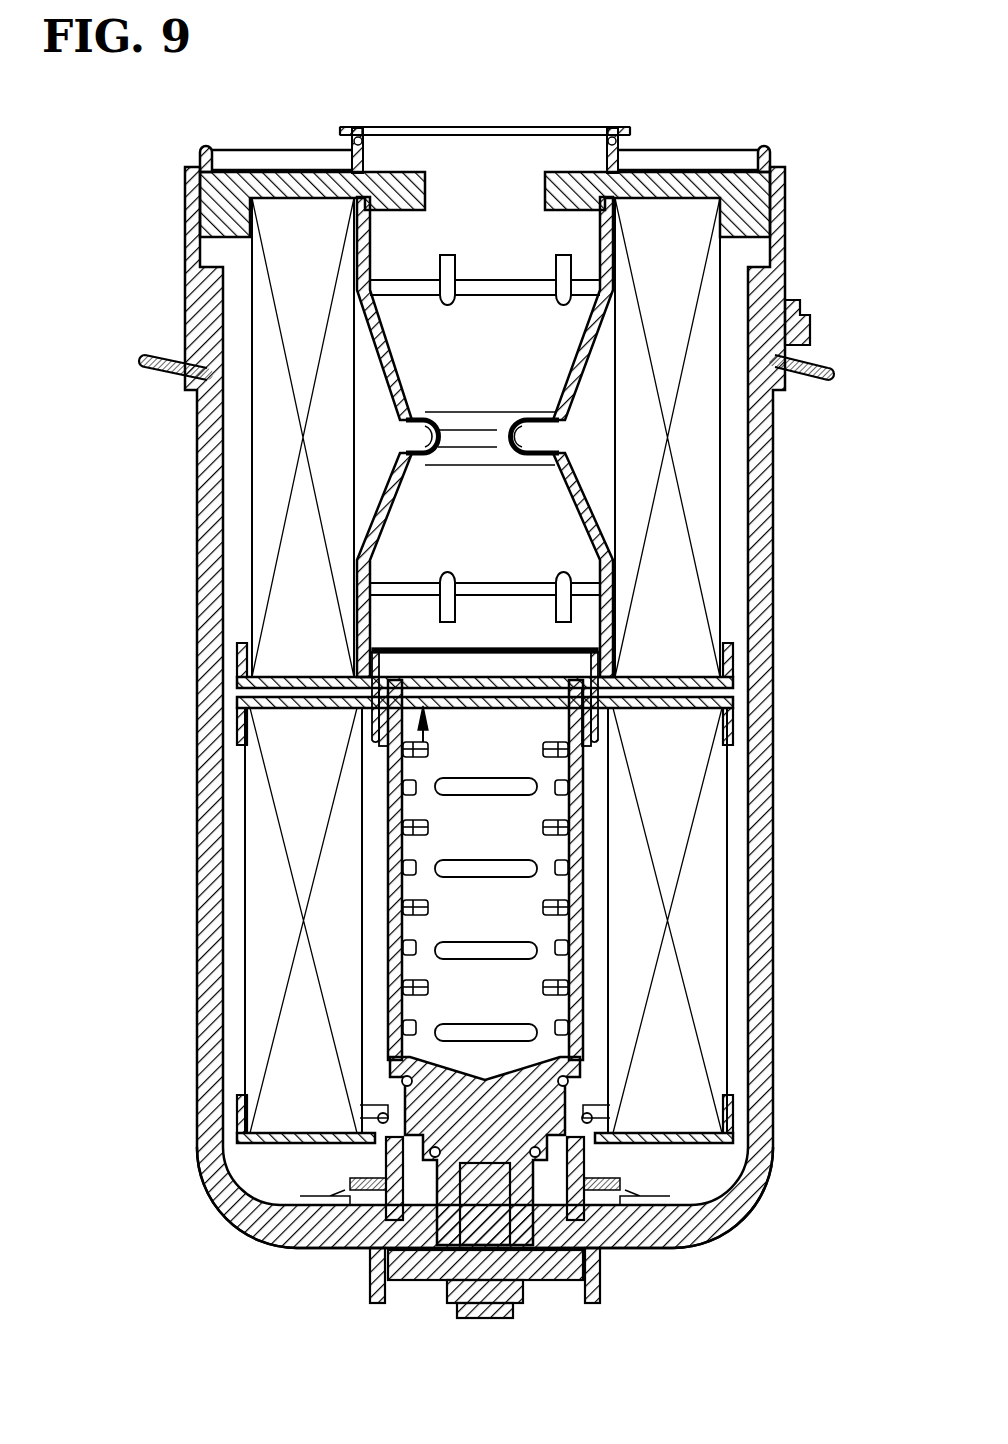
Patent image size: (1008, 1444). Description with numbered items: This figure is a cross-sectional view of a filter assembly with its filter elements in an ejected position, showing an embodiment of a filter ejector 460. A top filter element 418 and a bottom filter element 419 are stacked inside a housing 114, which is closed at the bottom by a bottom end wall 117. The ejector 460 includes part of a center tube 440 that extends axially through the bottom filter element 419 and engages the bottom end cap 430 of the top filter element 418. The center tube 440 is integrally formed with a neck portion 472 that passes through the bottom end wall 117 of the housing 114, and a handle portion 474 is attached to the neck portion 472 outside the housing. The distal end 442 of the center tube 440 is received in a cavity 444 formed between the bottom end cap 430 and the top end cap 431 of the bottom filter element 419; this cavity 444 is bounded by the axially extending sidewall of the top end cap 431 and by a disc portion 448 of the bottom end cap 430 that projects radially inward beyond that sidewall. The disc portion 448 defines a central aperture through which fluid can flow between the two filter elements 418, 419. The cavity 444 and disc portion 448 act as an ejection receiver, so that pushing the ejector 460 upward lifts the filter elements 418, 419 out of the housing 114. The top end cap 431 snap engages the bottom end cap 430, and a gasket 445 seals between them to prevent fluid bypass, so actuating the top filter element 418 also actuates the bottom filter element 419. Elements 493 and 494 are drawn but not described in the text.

The housing 114 is at (773, 697).
The bottom end wall 117 is at (726, 1226).
The top filter element 418 is at (238, 652).
The bottom filter element 419 is at (238, 736).
The bottom end cap 430 is at (735, 660).
The top end cap 431 is at (308, 706).
The center tube 440 is at (390, 748).
The distal end 442 is at (545, 688).
The cavity 444 is at (423, 752).
The gasket 445 is at (667, 673).
The disc portion 448 is at (402, 648).
The filter ejector 460 is at (555, 1299).
The neck portion 472 is at (635, 1248).
The handle portion 474 is at (402, 1282).
The standoff 493 is at (585, 1153).
The inner plug 494 is at (553, 1255).